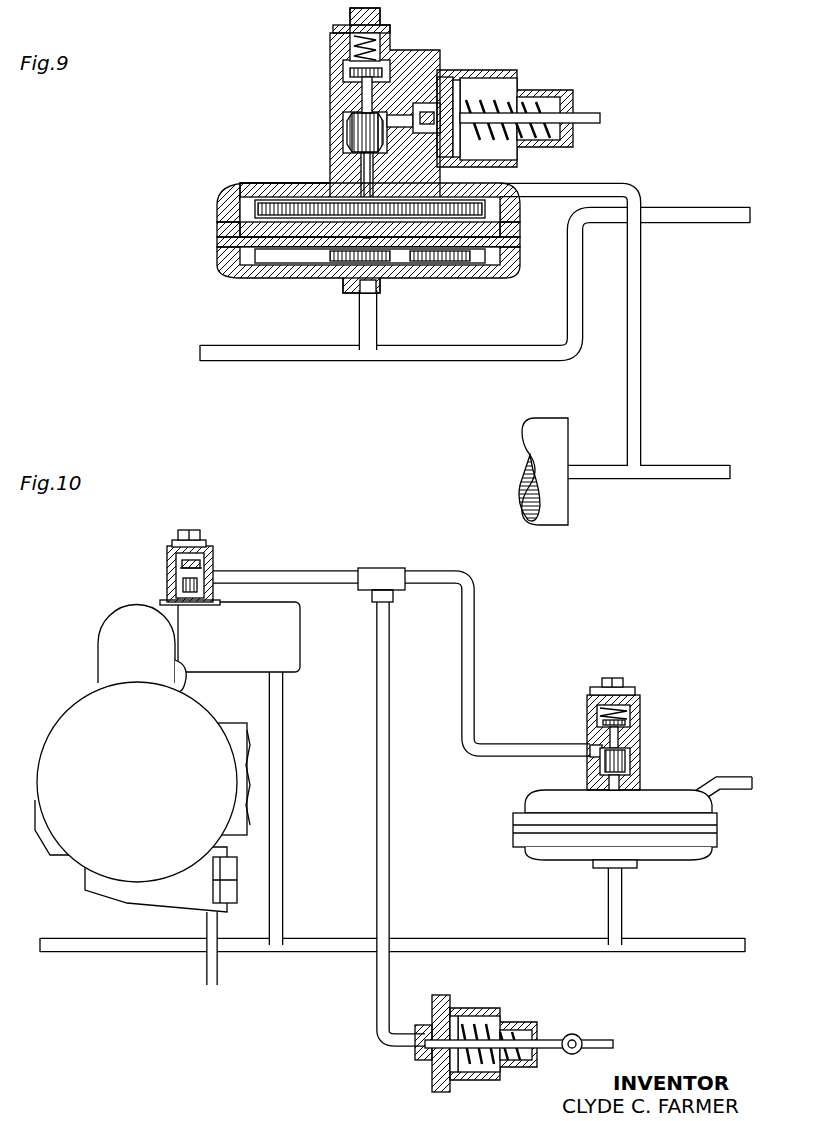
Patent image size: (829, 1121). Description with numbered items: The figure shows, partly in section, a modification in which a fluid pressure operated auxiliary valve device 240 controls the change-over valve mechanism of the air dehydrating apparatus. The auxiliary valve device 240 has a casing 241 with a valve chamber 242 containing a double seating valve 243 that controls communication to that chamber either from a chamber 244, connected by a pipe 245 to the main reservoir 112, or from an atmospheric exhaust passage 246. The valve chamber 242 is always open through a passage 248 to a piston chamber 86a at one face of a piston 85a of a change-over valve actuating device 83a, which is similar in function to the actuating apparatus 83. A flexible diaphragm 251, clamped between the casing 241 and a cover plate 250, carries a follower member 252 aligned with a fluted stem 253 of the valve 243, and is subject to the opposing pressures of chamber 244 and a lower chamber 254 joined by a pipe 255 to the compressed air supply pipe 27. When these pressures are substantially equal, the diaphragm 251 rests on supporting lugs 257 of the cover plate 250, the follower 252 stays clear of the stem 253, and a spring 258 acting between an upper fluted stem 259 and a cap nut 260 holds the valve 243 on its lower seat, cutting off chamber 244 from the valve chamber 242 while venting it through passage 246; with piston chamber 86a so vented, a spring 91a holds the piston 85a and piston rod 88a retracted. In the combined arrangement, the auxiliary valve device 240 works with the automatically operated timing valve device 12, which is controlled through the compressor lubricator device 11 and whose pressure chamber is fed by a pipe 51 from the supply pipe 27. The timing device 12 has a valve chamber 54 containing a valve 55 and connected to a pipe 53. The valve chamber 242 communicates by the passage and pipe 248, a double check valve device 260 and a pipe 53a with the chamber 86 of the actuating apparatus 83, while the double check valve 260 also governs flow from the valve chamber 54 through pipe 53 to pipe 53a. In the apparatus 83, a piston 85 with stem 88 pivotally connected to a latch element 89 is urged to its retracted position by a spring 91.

In FIG. 9, the cap nut 260 is at (348, 12).
In FIG. 10, the cap nut 260 is at (388, 575).
In FIG. 9, the spring 258 is at (391, 35).
In FIG. 10, the spring 258 is at (595, 712).
In FIG. 9, the fluted stem 259 is at (338, 68).
In FIG. 9, the atmospheric exhaust passage 246 is at (345, 75).
In FIG. 10, the atmospheric exhaust passage 246 is at (636, 722).
In FIG. 9, the double seating valve 243 is at (348, 130).
In FIG. 10, the double seating valve 243 is at (600, 771).
In FIG. 9, the valve chamber 242 is at (355, 133).
In FIG. 10, the valve chamber 242 is at (630, 754).
In FIG. 9, the casing 241 is at (345, 165).
In FIG. 9, the chamber 244 is at (310, 193).
In FIG. 9, the fluted stem 253 is at (375, 195).
In FIG. 10, the fluted stem 253 is at (632, 775).
In FIG. 9, the passage 248 is at (425, 112).
In FIG. 10, the passage 248 is at (597, 752).
In FIG. 9, the piston chamber 86a is at (446, 100).
In FIG. 9, the piston 85a is at (455, 105).
In FIG. 9, the change-over valve actuating device 83a is at (530, 88).
In FIG. 9, the piston rod 88a is at (582, 118).
In FIG. 9, the spring 91a is at (545, 140).
In FIG. 9, the auxiliary valve device 240 is at (240, 188).
In FIG. 10, the auxiliary valve device 240 is at (530, 803).
In FIG. 9, the follower member 252 is at (285, 225).
In FIG. 9, the flexible diaphragm 251 is at (245, 245).
In FIG. 9, the cover plate 250 is at (248, 275).
In FIG. 9, the chamber 254 is at (438, 262).
In FIG. 9, the supporting lugs 257 is at (345, 262).
In FIG. 9, the pipe 255 is at (378, 326).
In FIG. 10, the pipe 255 is at (620, 892).
In FIG. 9, the air supply pipe 27 is at (290, 352).
In FIG. 10, the air supply pipe 27 is at (480, 940).
In FIG. 9, the pipe 245 is at (640, 370).
In FIG. 10, the pipe 245 is at (733, 783).
In FIG. 9, the main reservoir 112 is at (560, 430).
In FIG. 10, the timing valve device 12 is at (163, 598).
In FIG. 10, the valve 55 is at (212, 565).
In FIG. 10, the valve chamber 54 is at (210, 590).
In FIG. 10, the pipe 53 is at (305, 572).
In FIG. 10, the compressor lubricator device 11 is at (80, 695).
In FIG. 10, the pipe 51 is at (283, 724).
In FIG. 10, the pipe 53a is at (390, 981).
In FIG. 10, the piston 85 is at (450, 1028).
In FIG. 10, the pressure responsive valve actuating apparatus 83 is at (500, 1010).
In FIG. 10, the stem 88 is at (553, 1040).
In FIG. 10, the latch element 89 is at (598, 1040).
In FIG. 10, the chamber 86 is at (428, 1062).
In FIG. 10, the spring 91 is at (478, 1082).